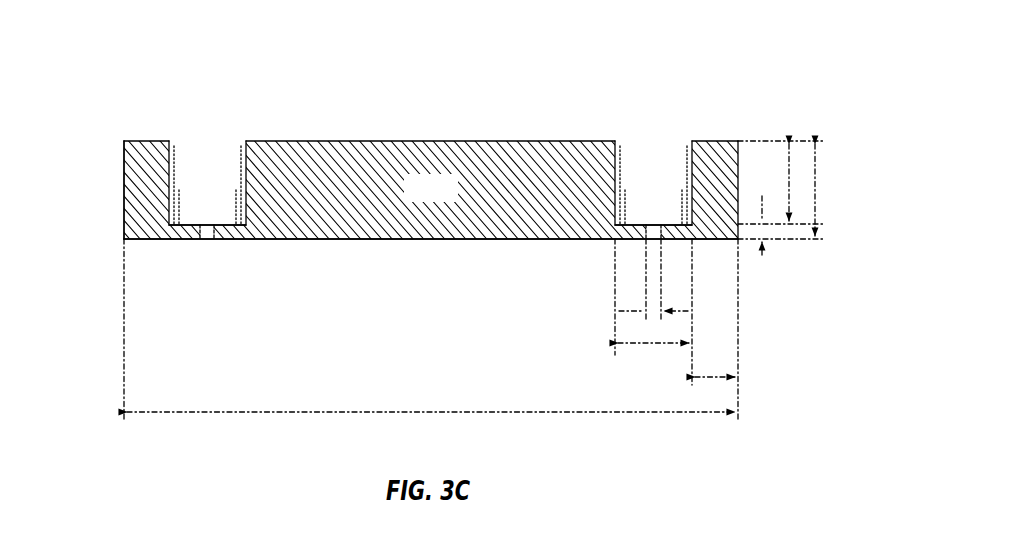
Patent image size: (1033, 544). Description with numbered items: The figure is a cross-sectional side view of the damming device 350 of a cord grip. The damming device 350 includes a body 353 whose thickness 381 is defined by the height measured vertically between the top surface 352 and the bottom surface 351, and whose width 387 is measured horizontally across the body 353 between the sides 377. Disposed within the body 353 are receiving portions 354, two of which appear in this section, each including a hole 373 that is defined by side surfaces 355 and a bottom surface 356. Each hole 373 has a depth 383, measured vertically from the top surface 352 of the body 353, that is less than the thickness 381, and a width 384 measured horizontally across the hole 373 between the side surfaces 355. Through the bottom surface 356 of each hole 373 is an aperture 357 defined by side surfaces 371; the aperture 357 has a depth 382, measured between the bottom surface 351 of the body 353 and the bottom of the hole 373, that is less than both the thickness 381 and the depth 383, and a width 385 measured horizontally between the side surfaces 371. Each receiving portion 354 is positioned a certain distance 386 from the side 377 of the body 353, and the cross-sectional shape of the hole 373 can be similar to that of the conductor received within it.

The damming device 350 is at (142, 60).
The bottom surface 351 is at (430, 241).
The top surface 352 is at (431, 141).
The body 353 is at (413, 200).
The receiving portion 354 is at (233, 121).
The side surface 355 is at (166, 158).
The bottom surface 356 is at (185, 228).
The aperture 357 is at (208, 241).
The side surface 371 is at (637, 232).
The hole 373 is at (653, 157).
The side 377 is at (124, 190).
The thickness 381 is at (815, 195).
The depth 382 is at (762, 262).
The depth 383 is at (787, 167).
The width 384 is at (660, 345).
The width 385 is at (630, 311).
The distance 386 is at (715, 377).
The width 387 is at (402, 413).